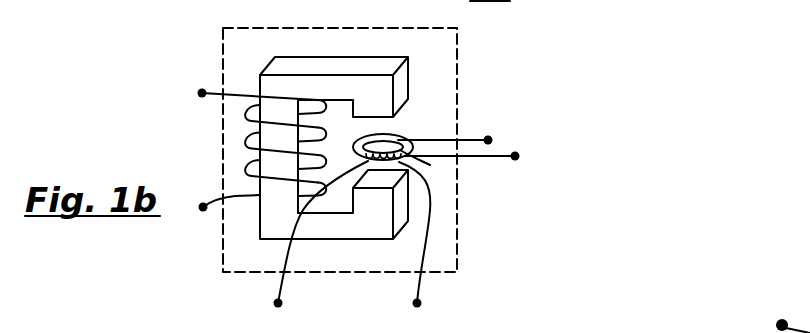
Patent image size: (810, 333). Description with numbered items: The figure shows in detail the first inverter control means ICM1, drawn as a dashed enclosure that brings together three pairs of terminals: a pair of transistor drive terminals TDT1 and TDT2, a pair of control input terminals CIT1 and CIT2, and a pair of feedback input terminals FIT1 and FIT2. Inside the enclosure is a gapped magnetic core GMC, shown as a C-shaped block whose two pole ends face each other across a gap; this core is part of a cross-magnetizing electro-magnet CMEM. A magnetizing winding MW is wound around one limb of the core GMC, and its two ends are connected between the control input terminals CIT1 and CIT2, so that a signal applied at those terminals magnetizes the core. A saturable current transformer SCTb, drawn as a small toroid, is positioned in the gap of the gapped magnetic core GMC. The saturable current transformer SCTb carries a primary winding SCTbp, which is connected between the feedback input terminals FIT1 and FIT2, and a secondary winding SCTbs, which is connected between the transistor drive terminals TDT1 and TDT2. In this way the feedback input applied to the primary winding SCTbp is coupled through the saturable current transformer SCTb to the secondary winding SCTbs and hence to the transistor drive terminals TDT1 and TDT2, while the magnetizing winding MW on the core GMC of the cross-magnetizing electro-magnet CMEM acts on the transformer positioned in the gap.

The first inverter control means ICM1 is at (465, 242).
The gapped magnetic core GMC is at (320, 56).
The cross-magnetizing electro-magnet CMEM is at (372, 246).
The magnetizing winding MW is at (250, 155).
The control input terminal CIT1 is at (202, 93).
The control input terminal CIT2 is at (203, 207).
The saturable current transformer SCTb is at (388, 135).
The secondary winding SCTbs is at (383, 162).
The primary winding SCTbp is at (430, 165).
The feedback input terminal FIT1 is at (490, 137).
The feedback input terminal FIT2 is at (515, 158).
The transistor drive terminal TDT1 is at (278, 303).
The transistor drive terminal TDT2 is at (421, 301).